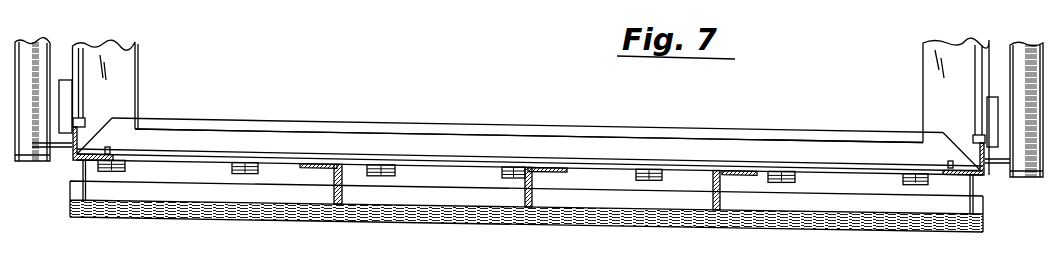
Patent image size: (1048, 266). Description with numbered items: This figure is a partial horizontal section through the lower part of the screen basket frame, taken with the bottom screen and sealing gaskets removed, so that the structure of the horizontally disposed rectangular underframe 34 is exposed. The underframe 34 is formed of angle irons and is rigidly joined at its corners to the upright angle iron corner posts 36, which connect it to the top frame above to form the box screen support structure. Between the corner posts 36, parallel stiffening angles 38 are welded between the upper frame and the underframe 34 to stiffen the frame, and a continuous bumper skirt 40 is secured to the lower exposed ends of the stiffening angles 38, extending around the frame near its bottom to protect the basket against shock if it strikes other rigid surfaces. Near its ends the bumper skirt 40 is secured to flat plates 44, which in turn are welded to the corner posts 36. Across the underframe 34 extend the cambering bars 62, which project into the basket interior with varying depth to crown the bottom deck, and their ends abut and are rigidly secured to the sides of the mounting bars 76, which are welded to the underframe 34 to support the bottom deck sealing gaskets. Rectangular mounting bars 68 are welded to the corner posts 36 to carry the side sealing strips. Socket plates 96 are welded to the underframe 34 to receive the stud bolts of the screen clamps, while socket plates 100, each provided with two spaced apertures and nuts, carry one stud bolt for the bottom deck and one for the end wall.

The underframe 34 is at (220, 121).
The corner post 36 is at (70, 161).
The stiffening angle 38 is at (344, 201).
The bumper skirt 40 is at (839, 240).
The flat plate 44 is at (84, 205).
The cambering bar 62 is at (135, 55).
The mounting bar 68 is at (81, 126).
The mounting bar 76 is at (310, 129).
The socket plate 96 is at (120, 173).
The socket plate 100 is at (63, 90).